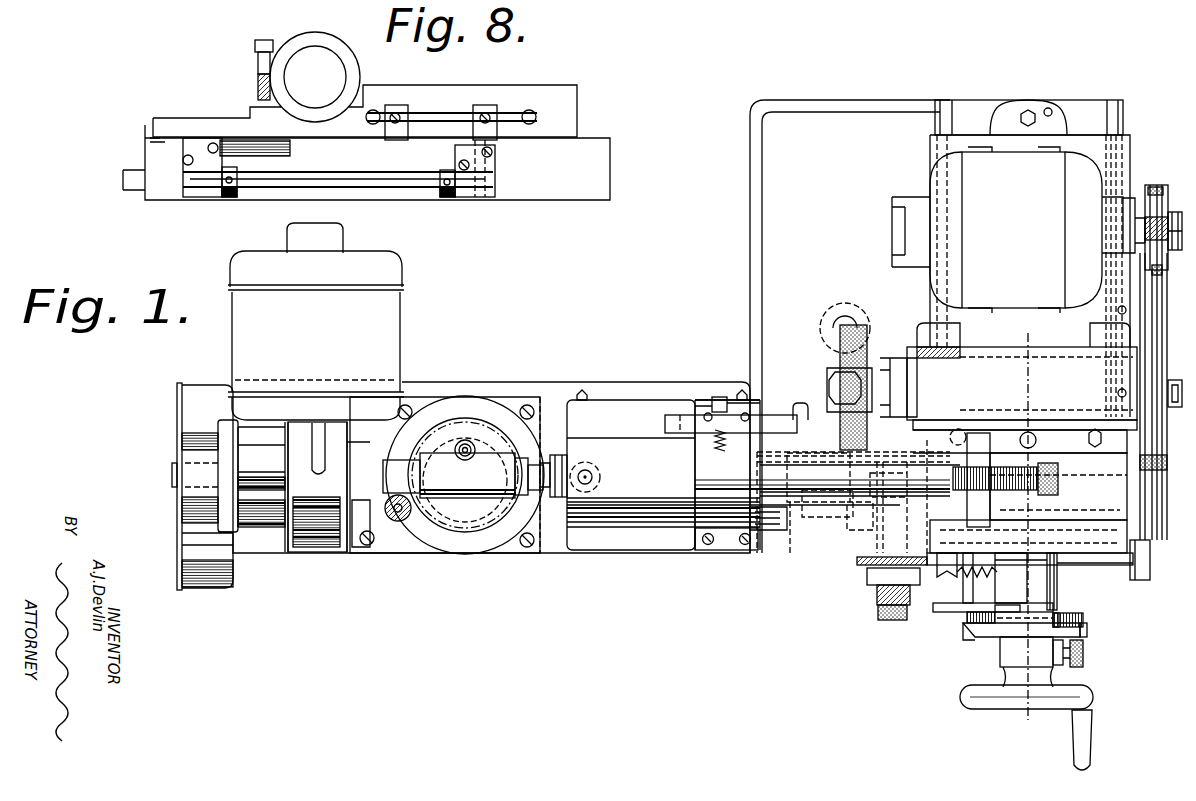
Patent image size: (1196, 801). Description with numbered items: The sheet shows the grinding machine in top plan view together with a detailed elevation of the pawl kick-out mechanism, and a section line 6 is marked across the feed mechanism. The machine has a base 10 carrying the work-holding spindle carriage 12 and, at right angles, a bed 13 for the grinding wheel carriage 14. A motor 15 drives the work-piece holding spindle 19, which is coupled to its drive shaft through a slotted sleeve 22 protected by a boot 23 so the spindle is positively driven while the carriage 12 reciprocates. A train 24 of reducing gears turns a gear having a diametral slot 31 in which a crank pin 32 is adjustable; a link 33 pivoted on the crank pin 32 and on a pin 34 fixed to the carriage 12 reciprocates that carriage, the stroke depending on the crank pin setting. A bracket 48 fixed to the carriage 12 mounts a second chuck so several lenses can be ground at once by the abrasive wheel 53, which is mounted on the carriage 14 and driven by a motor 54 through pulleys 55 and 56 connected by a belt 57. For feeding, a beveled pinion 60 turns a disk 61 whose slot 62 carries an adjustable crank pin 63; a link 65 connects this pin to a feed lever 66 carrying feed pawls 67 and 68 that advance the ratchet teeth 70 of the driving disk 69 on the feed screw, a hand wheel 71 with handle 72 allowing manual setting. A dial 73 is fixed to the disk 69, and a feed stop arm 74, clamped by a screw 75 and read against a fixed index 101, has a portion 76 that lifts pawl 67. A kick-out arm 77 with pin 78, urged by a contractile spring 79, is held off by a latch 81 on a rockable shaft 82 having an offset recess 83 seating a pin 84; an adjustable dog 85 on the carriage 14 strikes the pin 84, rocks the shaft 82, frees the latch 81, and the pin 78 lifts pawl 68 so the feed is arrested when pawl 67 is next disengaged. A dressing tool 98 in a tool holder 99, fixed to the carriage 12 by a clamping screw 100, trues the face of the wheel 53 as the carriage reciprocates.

In FIG. 1, the section line 6 is at (1026, 530).
In FIG. 1, the base 10 is at (605, 390).
In FIG. 1, the work-holding spindle carriage 12 is at (623, 422).
In FIG. 8, the bed 13 is at (528, 188).
In FIG. 1, the bed 13 is at (1120, 120).
In FIG. 8, the grinding wheel carriage 14 is at (576, 124).
In FIG. 1, the grinding wheel carriage 14 is at (1120, 298).
In FIG. 1, the motor 15 is at (327, 331).
In FIG. 1, the work-piece holding spindle 19 is at (553, 498).
In FIG. 1, the sleeve 22 is at (410, 483).
In FIG. 1, the boot 23 is at (410, 508).
In FIG. 1, the train of reducing gears 24 is at (200, 497).
In FIG. 1, the diametral slot 31 is at (478, 500).
In FIG. 1, the crank pin 32 is at (465, 440).
In FIG. 1, the link 33 is at (493, 450).
In FIG. 1, the pin 34 is at (600, 470).
In FIG. 1, the bracket 48 is at (695, 530).
In FIG. 1, the abrasive wheel 53 is at (850, 325).
In FIG. 1, the motor 54 is at (1027, 208).
In FIG. 1, the pulley 55 is at (1160, 185).
In FIG. 1, the pulley 56 is at (1153, 353).
In FIG. 1, the belt 57 is at (1155, 310).
In FIG. 1, the beveled pinion 60 is at (890, 468).
In FIG. 1, the disk 61 is at (857, 562).
In FIG. 1, the slot 62 is at (867, 578).
In FIG. 1, the crank pin 63 is at (878, 605).
In FIG. 1, the link 65 is at (940, 577).
In FIG. 1, the feed lever 66 is at (1050, 603).
In FIG. 1, the feed pawl 67 is at (1063, 622).
In FIG. 1, the feed pawl 68 is at (1060, 617).
In FIG. 1, the driving disk 69 is at (1083, 617).
In FIG. 1, the ratchet teeth 70 is at (1085, 622).
In FIG. 1, the hand wheel 71 is at (1093, 695).
In FIG. 1, the handle 72 is at (1088, 745).
In FIG. 1, the dial 73 is at (1080, 635).
In FIG. 1, the feed stop arm 74 is at (1000, 642).
In FIG. 1, the screw 75 is at (1083, 663).
In FIG. 1, the portion 76 is at (965, 617).
In FIG. 1, the kick-out arm 77 is at (998, 603).
In FIG. 1, the pin 78 is at (973, 637).
In FIG. 1, the contractile spring 79 is at (985, 520).
In FIG. 1, the latch 81 is at (1140, 568).
In FIG. 8, the shaft 82 is at (412, 183).
In FIG. 1, the shaft 82 is at (1135, 545).
In FIG. 8, the recess 83 is at (477, 185).
In FIG. 8, the pin 84 is at (492, 153).
In FIG. 8, the adjustable dog 85 is at (487, 113).
In FIG. 1, the dressing tool 98 is at (800, 403).
In FIG. 1, the tool holder 99 is at (797, 428).
In FIG. 1, the clamping screw 100 is at (718, 397).
In FIG. 1, the fixed index 101 is at (933, 610).